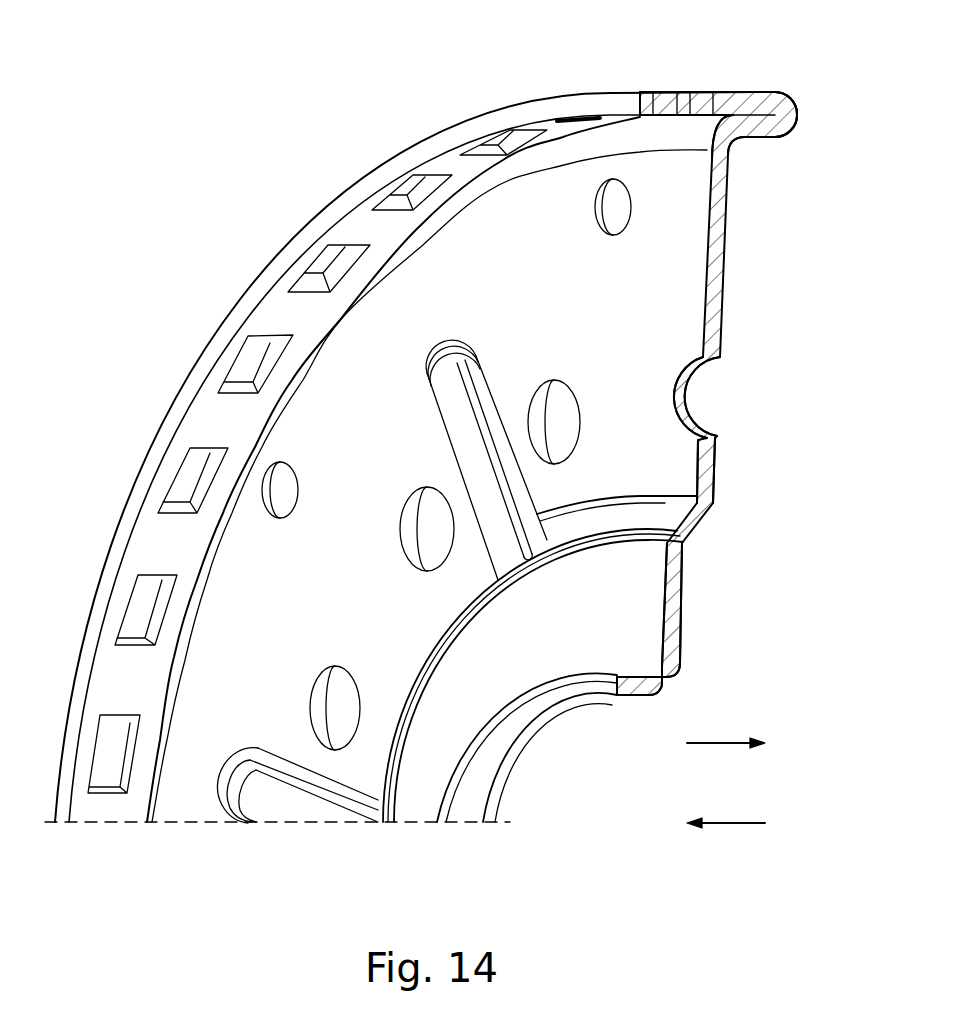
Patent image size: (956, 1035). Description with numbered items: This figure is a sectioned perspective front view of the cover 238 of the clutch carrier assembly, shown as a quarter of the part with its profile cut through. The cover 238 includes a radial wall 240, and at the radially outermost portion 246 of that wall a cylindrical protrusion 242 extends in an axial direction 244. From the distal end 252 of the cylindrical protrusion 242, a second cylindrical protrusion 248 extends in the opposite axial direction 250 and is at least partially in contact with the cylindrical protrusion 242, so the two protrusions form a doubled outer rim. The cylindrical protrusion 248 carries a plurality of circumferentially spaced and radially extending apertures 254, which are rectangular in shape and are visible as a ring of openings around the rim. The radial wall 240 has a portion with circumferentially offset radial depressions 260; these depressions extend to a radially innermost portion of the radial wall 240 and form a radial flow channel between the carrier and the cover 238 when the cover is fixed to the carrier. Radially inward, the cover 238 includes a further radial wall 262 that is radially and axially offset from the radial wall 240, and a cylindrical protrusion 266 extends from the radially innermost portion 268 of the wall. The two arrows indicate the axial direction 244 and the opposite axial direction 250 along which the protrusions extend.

The cover 238 is at (717, 338).
The radial wall 240 is at (715, 265).
The cylindrical protrusion 242 is at (760, 130).
The axial direction 244 is at (725, 745).
The radially outermost portion 246 is at (725, 143).
The cylindrical protrusion 248 is at (733, 105).
The axial direction 250 is at (725, 825).
The distal end 252 is at (780, 116).
The apertures 254 is at (252, 358).
The radial depressions 260 is at (492, 528).
The radial wall 262 is at (675, 617).
The cylindrical protrusion 266 is at (637, 688).
The radially innermost portion 268 is at (675, 677).